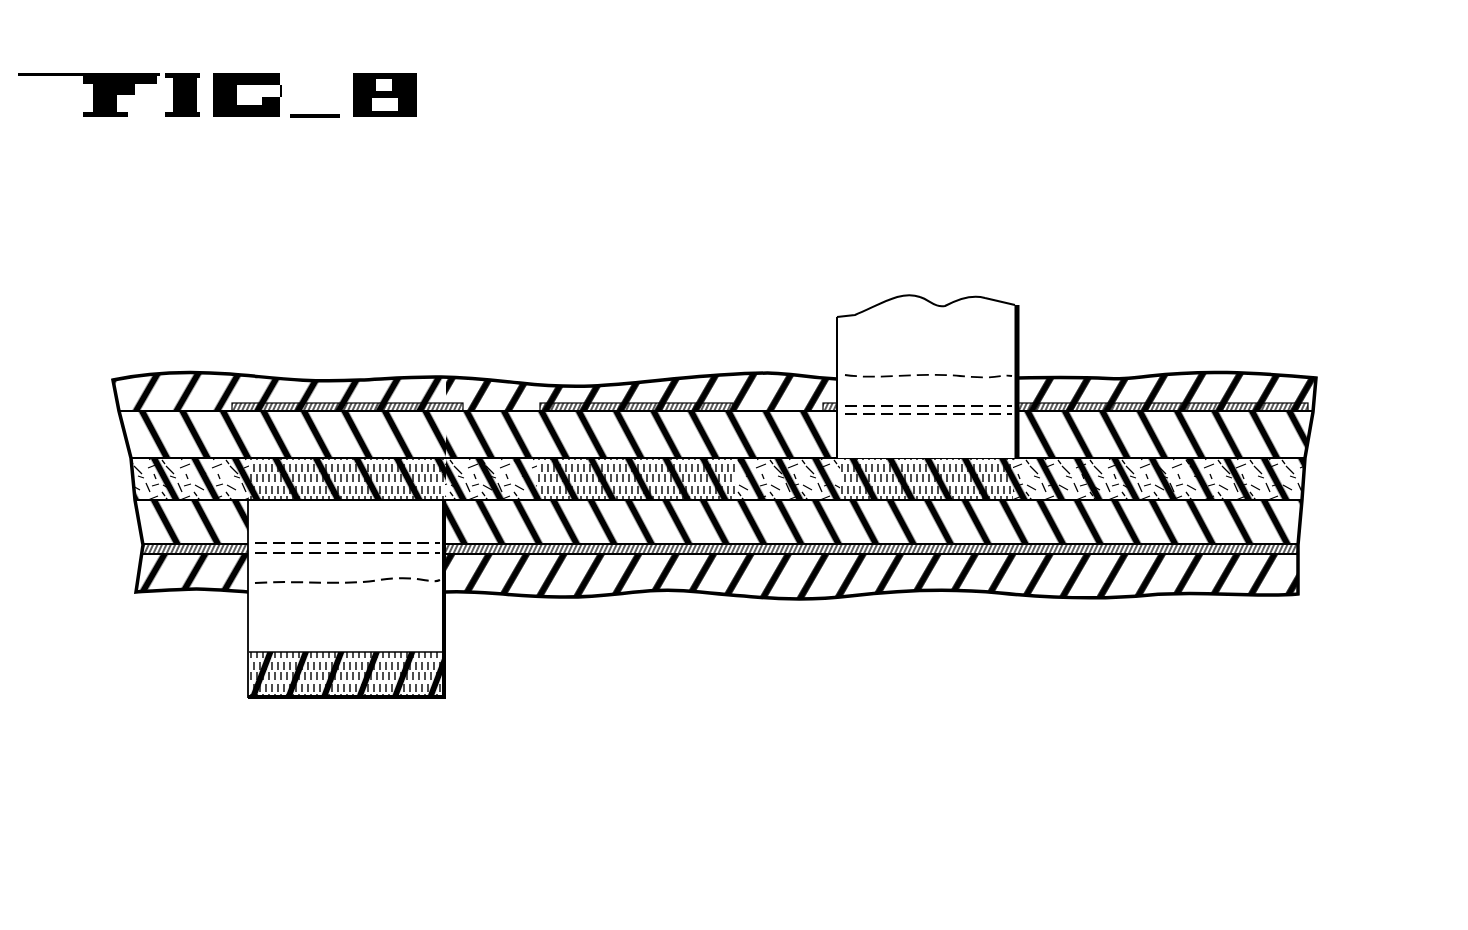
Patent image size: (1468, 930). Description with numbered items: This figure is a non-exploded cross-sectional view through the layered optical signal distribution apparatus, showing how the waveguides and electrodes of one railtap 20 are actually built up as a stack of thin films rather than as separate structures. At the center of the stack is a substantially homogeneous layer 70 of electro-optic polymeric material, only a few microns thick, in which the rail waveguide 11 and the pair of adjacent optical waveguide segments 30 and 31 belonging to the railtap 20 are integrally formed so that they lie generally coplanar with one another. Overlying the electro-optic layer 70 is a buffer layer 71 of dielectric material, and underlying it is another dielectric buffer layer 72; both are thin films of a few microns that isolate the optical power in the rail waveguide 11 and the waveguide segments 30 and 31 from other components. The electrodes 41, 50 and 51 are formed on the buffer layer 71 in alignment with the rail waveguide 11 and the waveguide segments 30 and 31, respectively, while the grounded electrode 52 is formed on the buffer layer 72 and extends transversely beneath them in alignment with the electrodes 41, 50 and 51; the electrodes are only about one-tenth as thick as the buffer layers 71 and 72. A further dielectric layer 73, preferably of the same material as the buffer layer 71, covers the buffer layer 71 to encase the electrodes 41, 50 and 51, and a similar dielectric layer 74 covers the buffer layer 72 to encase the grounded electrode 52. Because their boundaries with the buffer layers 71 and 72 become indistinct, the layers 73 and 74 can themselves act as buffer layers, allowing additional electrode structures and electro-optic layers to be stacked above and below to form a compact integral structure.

The rail waveguide 11 is at (656, 594).
The railtap 20 is at (811, 300).
The optical waveguide segment 30 is at (320, 655).
The optical waveguide segment 31 is at (972, 490).
The electrode 41 is at (616, 408).
The electrode 50 is at (372, 410).
The electrode 51 is at (1030, 410).
The grounded electrode 52 is at (1297, 550).
The electro-optic layer 70 is at (1304, 480).
The buffer layer 71 is at (1310, 437).
The buffer layer 72 is at (1300, 525).
The dielectric layer 73 is at (1316, 397).
The dielectric layer 74 is at (1297, 578).